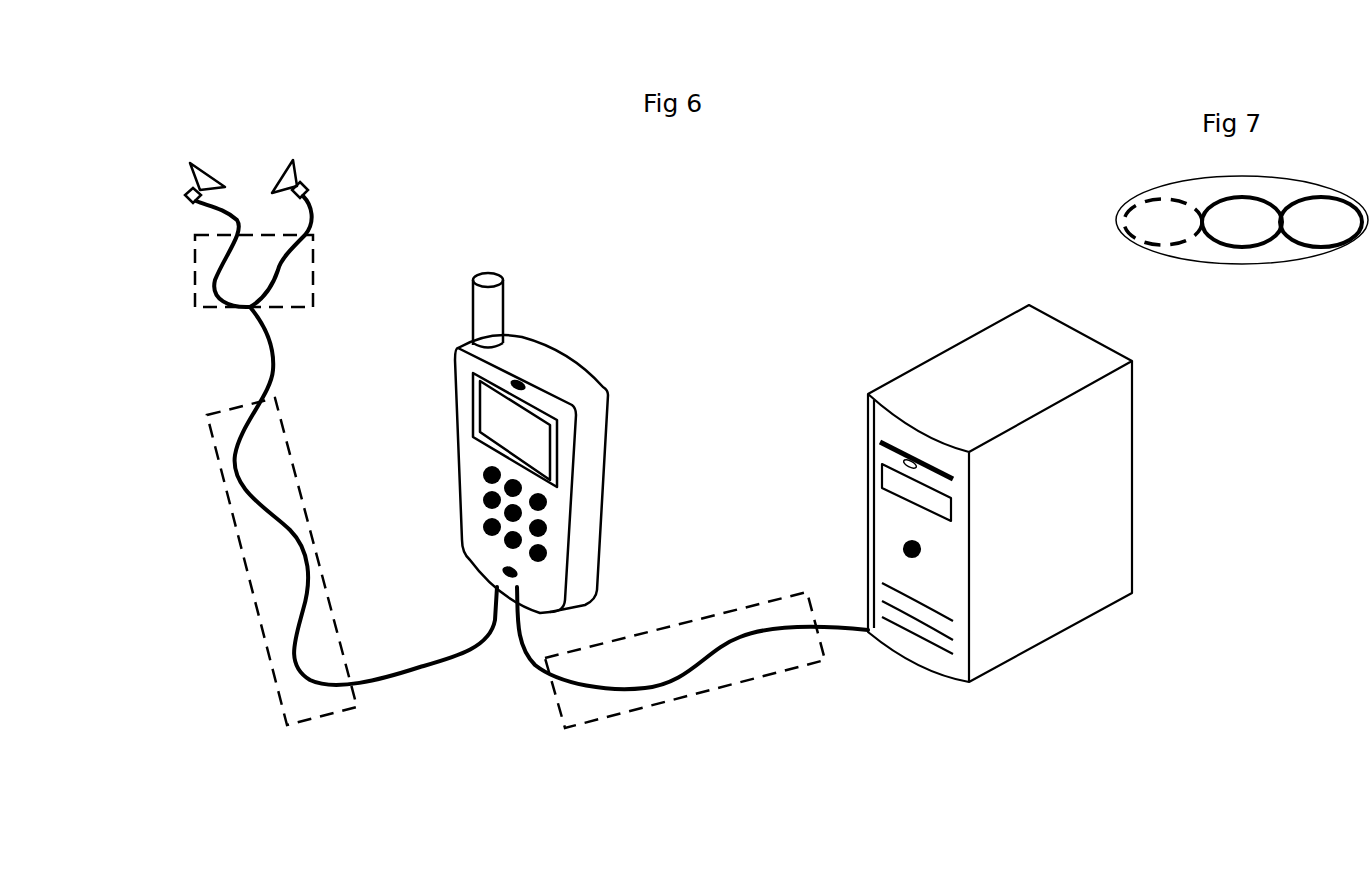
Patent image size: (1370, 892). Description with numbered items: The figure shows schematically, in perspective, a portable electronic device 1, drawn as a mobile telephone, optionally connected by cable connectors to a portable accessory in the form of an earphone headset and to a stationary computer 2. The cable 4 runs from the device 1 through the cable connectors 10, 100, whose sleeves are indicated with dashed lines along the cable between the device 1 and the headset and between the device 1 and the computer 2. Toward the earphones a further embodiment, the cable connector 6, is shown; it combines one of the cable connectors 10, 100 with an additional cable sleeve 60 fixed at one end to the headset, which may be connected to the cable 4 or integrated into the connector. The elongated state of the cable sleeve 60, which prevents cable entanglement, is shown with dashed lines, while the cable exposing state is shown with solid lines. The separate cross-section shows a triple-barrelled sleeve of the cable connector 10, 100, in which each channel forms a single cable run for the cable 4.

In FIG. 6, the portable electronic device 1 is at (558, 373).
In FIG. 6, the computer 2 is at (979, 377).
In FIG. 6, the cable 4 is at (513, 657).
In FIG. 6, the cable connector 6 is at (249, 152).
In FIG. 6, the cable connector 10 is at (486, 584).
In FIG. 7, the cable connector 10 is at (1242, 271).
In FIG. 6, the cable connector 100 is at (238, 542).
In FIG. 7, the cable connector 100 is at (1297, 273).
In FIG. 6, the cable sleeve 60 is at (313, 272).